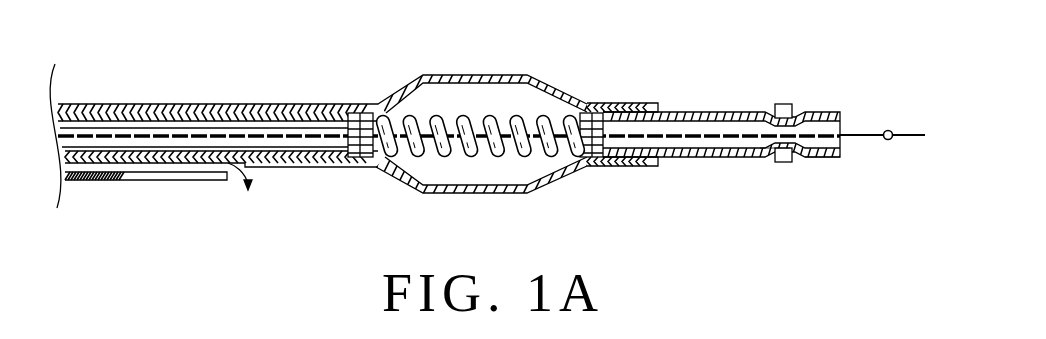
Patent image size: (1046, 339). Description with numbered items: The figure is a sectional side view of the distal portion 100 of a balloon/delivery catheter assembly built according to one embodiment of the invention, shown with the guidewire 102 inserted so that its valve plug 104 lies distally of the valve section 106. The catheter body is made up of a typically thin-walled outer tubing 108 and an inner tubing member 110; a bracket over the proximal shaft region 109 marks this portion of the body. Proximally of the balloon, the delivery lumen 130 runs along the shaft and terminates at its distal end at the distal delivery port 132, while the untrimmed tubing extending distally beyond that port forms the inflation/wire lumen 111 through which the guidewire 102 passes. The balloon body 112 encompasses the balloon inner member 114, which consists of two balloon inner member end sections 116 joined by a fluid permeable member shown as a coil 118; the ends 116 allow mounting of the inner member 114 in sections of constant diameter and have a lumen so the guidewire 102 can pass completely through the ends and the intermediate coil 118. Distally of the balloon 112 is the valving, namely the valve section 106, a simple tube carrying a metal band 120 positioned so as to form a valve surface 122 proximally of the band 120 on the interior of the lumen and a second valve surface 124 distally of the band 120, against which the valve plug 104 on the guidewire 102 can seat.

The distal portion of catheter assembly 100 is at (579, 65).
The guidewire 102 is at (903, 128).
The valve plug 104 is at (884, 131).
The valve section 106 is at (748, 97).
The outer tubing 108 is at (202, 103).
The proximal shaft portion 109 is at (234, 86).
The inner tubing member 110 is at (200, 164).
The inflation/wire lumen 111 is at (256, 122).
The balloon body 112 is at (404, 78).
The balloon inner member 114 is at (447, 113).
The balloon inner member end sections 116 is at (370, 160).
The coil 118 is at (488, 160).
The metal band 120 is at (786, 163).
The valve surface 122 is at (762, 145).
The valve surface 124 is at (838, 155).
The delivery lumen 130 is at (108, 170).
The distal delivery port 132 is at (253, 165).